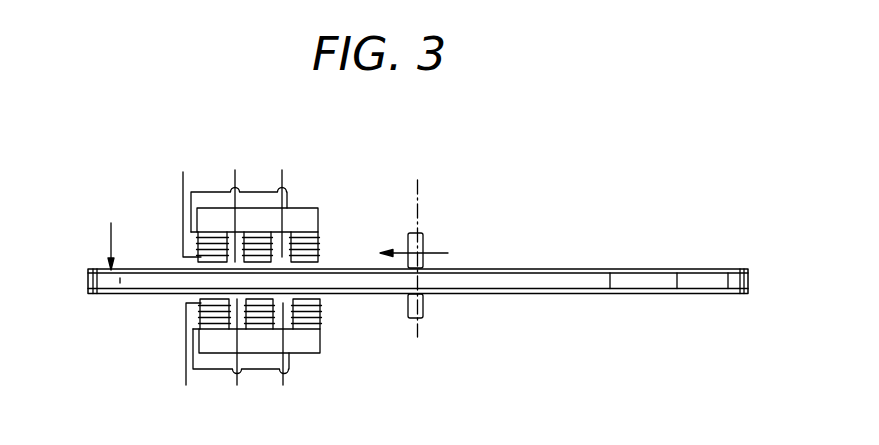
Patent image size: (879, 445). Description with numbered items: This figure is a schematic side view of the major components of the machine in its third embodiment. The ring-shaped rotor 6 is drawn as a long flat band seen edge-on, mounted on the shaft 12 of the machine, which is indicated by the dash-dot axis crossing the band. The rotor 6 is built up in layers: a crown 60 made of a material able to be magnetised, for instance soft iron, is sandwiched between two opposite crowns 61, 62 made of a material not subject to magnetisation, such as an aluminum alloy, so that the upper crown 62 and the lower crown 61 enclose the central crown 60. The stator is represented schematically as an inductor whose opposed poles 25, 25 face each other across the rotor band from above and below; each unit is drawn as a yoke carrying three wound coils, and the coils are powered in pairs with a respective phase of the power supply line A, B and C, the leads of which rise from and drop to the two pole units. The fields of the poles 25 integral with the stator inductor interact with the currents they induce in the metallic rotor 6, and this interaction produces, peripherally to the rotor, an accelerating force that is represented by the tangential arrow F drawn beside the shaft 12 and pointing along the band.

The ring-shaped rotor 6 is at (111, 243).
The shaft 12 is at (418, 210).
The opposed poles 25 is at (257, 210).
The crown 60 is at (449, 277).
The opposite crown 61 is at (660, 295).
The opposite crown 62 is at (653, 267).
The phase of the power supply line A is at (280, 277).
The phase of the power supply line B is at (235, 277).
The phase of the power supply line C is at (188, 277).
The tangential arrow F is at (436, 253).